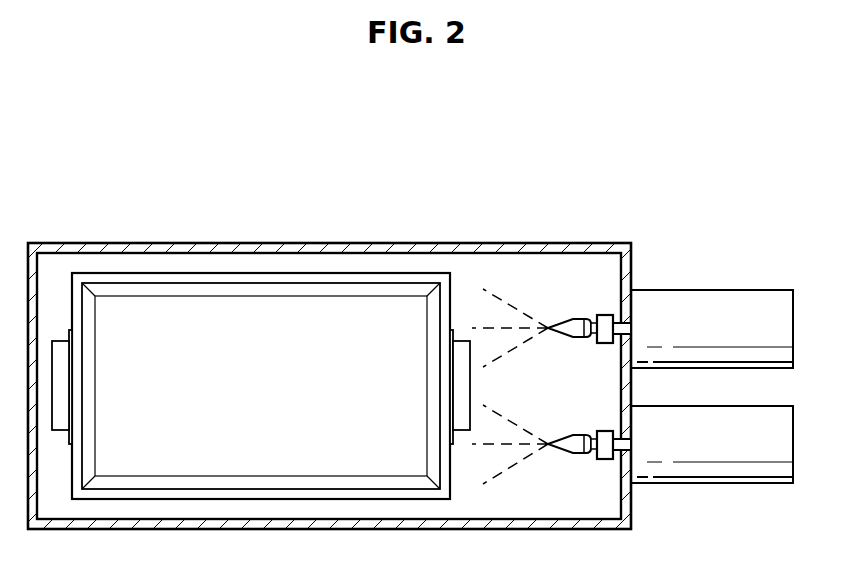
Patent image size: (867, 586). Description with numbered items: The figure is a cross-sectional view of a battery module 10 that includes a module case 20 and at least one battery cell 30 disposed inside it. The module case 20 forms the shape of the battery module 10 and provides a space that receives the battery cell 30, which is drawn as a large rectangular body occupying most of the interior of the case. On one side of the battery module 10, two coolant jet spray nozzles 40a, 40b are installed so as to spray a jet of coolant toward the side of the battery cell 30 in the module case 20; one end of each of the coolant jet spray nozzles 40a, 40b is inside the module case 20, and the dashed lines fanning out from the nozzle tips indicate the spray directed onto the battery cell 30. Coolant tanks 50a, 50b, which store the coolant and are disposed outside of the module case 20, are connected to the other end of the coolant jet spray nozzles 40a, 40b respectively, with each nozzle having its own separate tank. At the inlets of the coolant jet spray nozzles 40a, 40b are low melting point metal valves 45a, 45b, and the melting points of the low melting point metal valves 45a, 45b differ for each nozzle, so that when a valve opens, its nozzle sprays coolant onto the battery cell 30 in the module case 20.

The battery module 10 is at (160, 165).
The module case 20 is at (434, 243).
The battery cell 30 is at (290, 320).
The coolant jet spray nozzle 40a is at (573, 320).
The coolant jet spray nozzle 40b is at (573, 452).
The low melting point metal valve 45a is at (605, 315).
The low melting point metal valve 45b is at (605, 460).
The coolant tank 50a is at (737, 290).
The coolant tank 50b is at (737, 483).